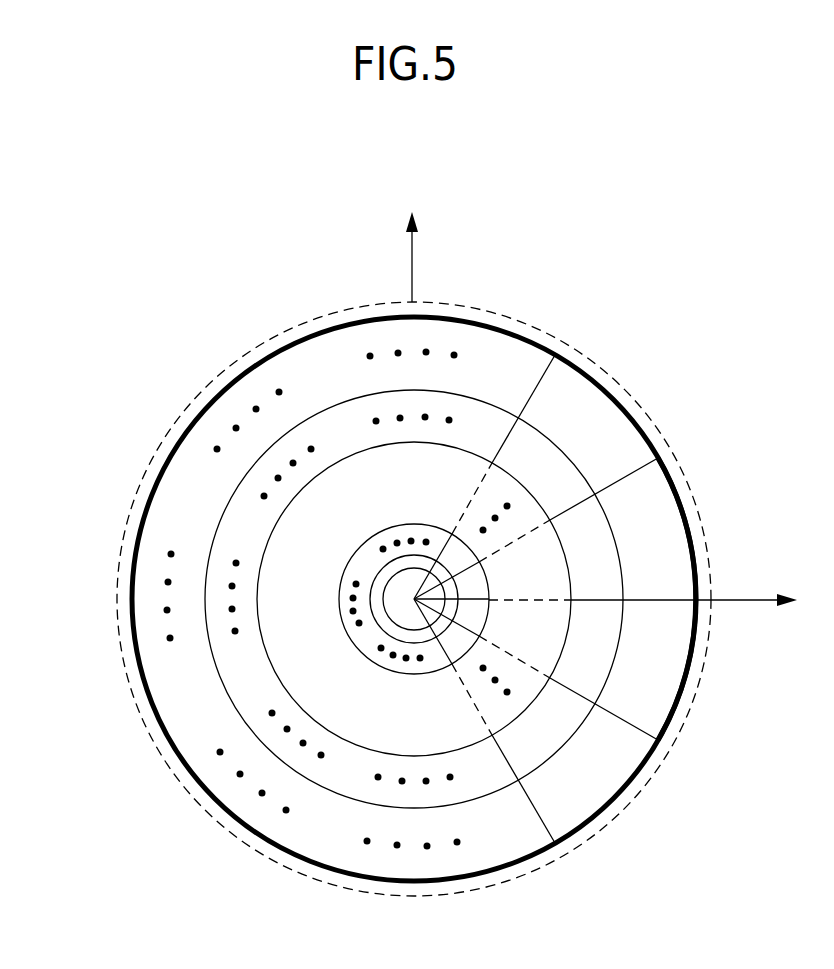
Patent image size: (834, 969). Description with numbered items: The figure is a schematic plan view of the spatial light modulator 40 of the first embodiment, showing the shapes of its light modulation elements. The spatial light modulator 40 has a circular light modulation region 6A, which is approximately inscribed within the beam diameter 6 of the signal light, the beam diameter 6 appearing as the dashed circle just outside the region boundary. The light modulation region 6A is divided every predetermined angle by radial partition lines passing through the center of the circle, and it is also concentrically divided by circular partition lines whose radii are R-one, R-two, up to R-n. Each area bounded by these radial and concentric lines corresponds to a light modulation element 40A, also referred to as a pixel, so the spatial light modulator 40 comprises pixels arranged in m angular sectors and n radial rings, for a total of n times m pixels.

The spatial light modulator 40 is at (162, 304).
The beam diameter 6 is at (445, 302).
The light modulation region 6A is at (507, 323).
The light modulation element 40A is at (620, 430).